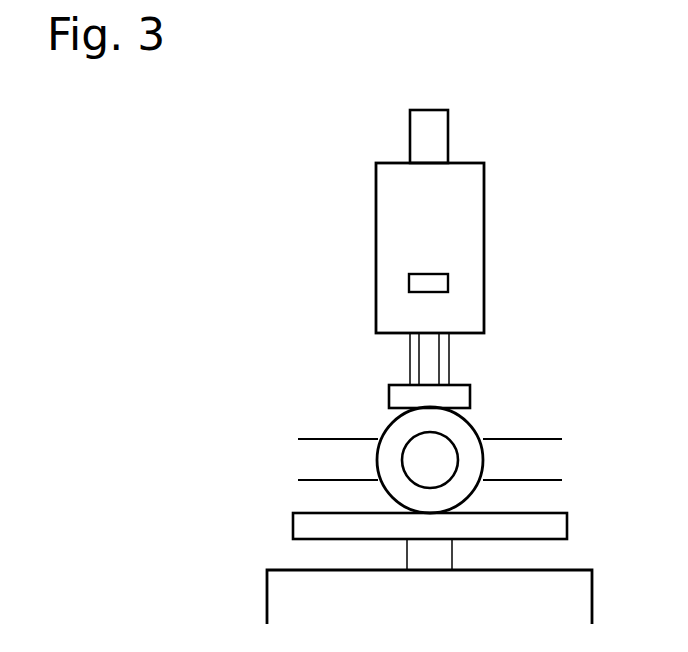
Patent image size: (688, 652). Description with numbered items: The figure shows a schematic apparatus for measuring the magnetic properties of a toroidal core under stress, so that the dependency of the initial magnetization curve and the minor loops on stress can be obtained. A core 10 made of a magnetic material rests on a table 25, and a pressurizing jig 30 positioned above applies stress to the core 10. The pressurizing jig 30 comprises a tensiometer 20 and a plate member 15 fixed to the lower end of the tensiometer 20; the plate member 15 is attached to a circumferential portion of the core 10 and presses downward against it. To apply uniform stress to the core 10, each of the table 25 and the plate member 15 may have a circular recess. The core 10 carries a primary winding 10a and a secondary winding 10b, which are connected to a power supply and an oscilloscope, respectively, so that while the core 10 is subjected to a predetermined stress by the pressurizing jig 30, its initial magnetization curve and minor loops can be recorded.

The pressurizing jig 30 is at (542, 158).
The tensiometer 20 is at (478, 209).
The plate member 15 is at (470, 392).
The core 10 is at (472, 420).
The primary winding 10a is at (313, 478).
The secondary winding 10b is at (557, 480).
The table 25 is at (560, 525).